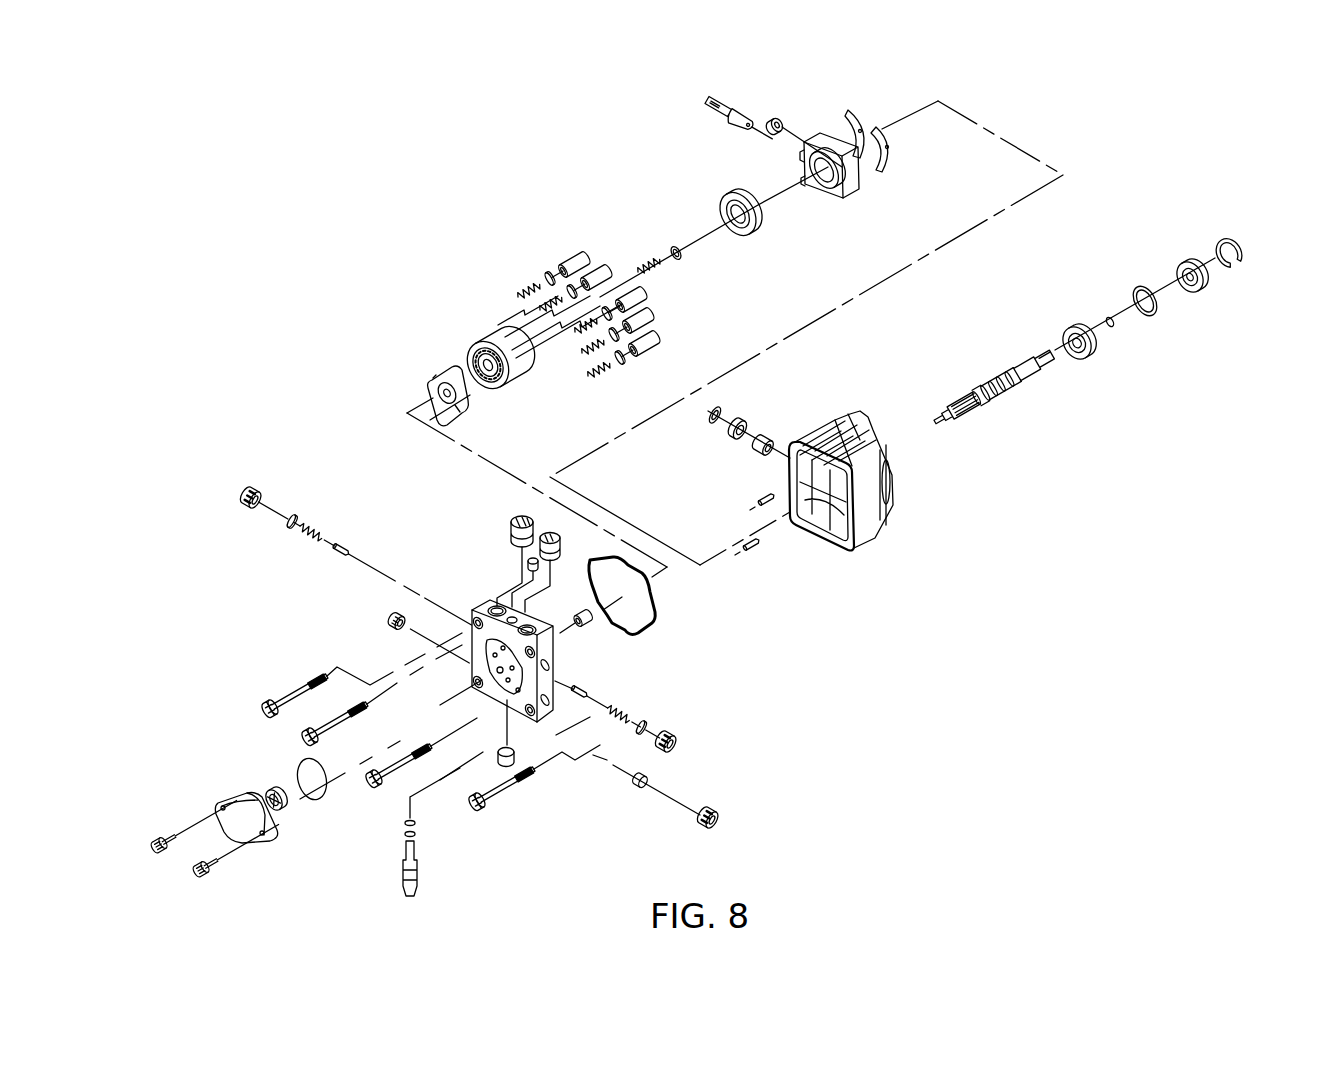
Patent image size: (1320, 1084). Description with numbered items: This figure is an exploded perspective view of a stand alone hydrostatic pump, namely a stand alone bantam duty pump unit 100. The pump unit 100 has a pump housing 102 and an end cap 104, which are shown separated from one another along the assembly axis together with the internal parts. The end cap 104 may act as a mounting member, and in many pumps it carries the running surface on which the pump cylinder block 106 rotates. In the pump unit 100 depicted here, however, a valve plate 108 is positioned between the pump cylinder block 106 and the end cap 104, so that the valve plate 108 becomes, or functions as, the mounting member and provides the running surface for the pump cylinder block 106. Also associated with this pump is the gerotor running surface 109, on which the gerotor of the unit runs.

The stand alone bantam duty pump unit 100 is at (949, 729).
The pump housing 102 is at (864, 547).
The end cap 104 is at (476, 603).
The pump cylinder block 106 is at (487, 333).
The valve plate 108 is at (438, 368).
The gerotor running surface 109 is at (284, 812).